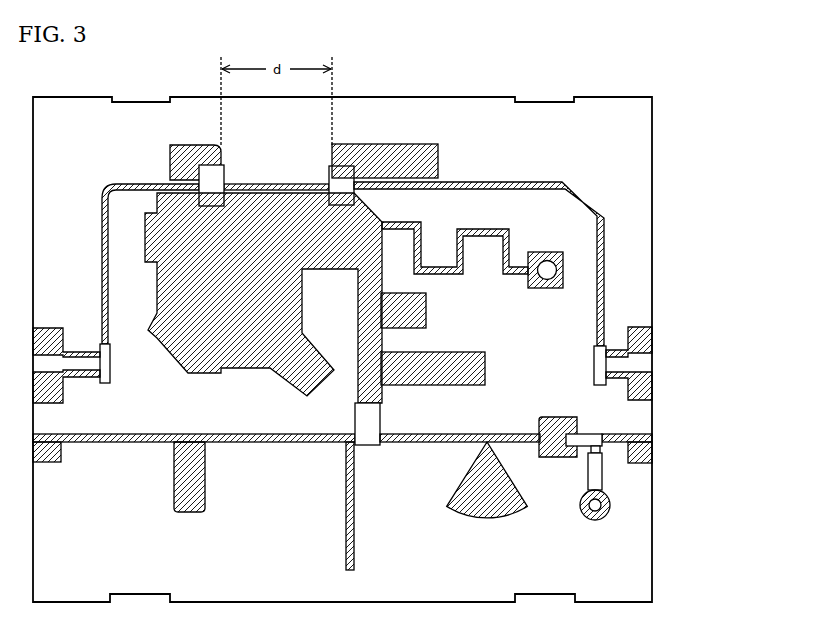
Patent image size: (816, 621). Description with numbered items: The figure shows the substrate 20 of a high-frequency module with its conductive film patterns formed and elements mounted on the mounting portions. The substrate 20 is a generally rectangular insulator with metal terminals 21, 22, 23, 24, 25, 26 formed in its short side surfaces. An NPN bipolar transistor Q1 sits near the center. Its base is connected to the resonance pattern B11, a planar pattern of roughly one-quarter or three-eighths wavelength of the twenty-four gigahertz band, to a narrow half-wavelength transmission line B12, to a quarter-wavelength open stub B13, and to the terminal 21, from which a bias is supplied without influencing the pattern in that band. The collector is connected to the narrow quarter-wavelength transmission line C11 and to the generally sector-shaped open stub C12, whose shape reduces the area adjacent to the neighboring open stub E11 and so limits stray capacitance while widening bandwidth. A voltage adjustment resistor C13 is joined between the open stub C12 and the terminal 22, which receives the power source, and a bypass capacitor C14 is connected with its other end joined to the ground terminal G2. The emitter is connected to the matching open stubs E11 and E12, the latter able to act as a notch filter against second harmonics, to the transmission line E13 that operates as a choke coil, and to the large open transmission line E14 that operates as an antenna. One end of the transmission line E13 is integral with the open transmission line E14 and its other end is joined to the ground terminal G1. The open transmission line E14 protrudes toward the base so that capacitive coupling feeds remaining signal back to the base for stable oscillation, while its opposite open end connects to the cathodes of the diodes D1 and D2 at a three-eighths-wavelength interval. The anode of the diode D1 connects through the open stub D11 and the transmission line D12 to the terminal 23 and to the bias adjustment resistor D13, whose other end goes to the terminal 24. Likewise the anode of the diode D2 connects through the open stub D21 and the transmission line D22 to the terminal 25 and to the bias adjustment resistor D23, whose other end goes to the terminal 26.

The substrate 20 is at (653, 578).
The terminal 21 is at (40, 462).
The terminal 22 is at (640, 463).
The terminal 23 is at (640, 327).
The terminal 24 is at (640, 372).
The terminal 25 is at (40, 328).
The terminal 26 is at (40, 403).
The diode D1 is at (329, 186).
The diode D2 is at (225, 185).
The open stub D11 is at (438, 156).
The transmission line D12 is at (563, 184).
The bias adjustment resistor D13 is at (594, 364).
The open stub D21 is at (170, 158).
The transmission line D22 is at (112, 184).
The bias adjustment resistor D23 is at (111, 364).
The open stub E11 is at (485, 356).
The open stub E12 is at (426, 312).
The transmission line E13 is at (497, 229).
The open transmission line E14 is at (157, 293).
The ground terminal G1 is at (552, 252).
The ground terminal G2 is at (600, 520).
The bipolar transistor Q1 is at (368, 446).
The resonance pattern B11 is at (346, 560).
The transmission line B12 is at (262, 434).
The open stub B13 is at (174, 504).
The transmission line C11 is at (450, 434).
The open stub C12 is at (492, 518).
The voltage adjustment resistor C13 is at (583, 434).
The bypass capacitor C14 is at (588, 476).